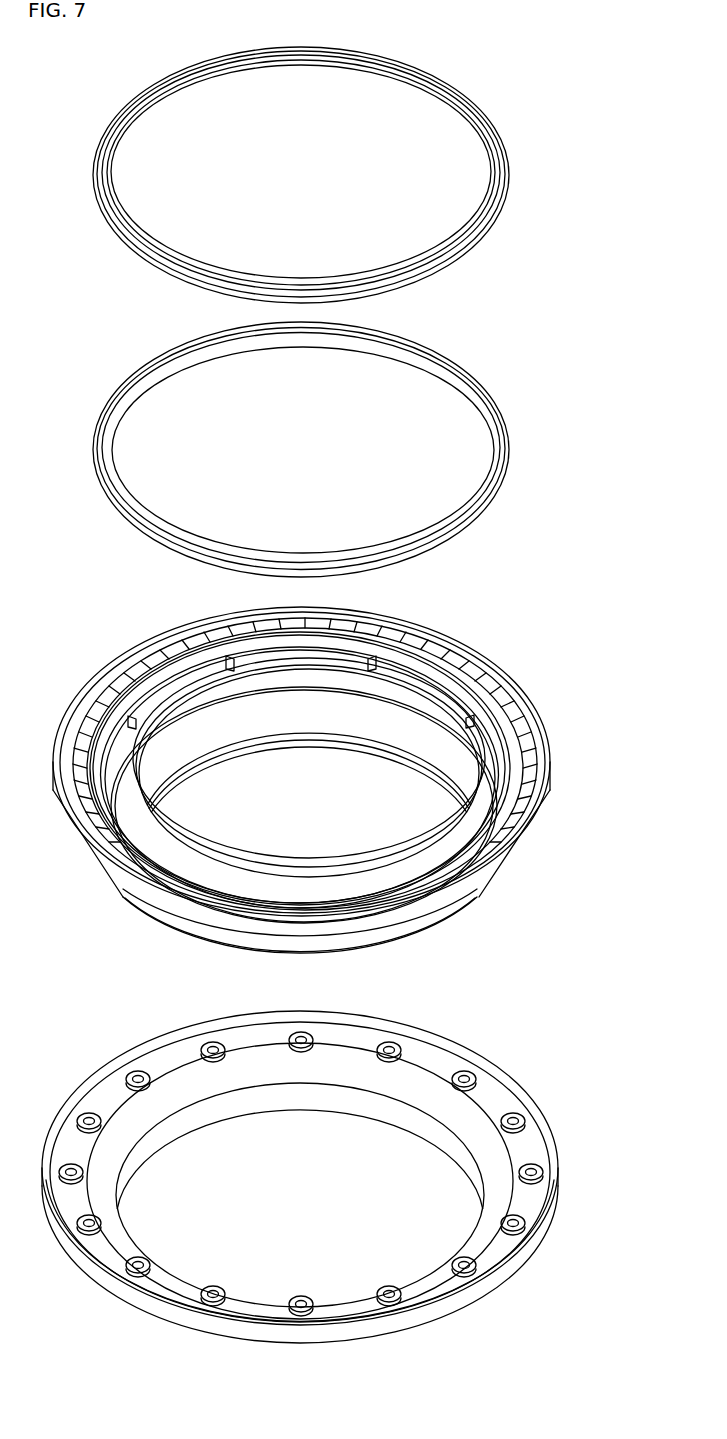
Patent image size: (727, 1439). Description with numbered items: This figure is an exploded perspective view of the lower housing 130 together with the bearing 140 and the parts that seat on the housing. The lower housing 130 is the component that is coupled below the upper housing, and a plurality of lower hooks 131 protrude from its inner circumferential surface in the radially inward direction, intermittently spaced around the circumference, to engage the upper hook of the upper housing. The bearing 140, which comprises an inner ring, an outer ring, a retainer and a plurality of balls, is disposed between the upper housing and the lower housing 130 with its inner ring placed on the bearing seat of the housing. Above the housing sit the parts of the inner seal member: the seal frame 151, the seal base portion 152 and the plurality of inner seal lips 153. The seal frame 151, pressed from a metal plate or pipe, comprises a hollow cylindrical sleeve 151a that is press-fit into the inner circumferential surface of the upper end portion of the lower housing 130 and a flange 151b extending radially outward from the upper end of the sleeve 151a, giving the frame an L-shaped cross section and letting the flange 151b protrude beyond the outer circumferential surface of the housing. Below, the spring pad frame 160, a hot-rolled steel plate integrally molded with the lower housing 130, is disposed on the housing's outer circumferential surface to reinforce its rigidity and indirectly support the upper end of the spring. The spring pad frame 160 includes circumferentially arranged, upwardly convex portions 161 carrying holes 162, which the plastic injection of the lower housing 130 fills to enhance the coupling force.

The lower housing 130 is at (359, 764).
The lower hook 131 is at (230, 667).
The bearing 140 is at (533, 690).
The seal frame 151 is at (358, 449).
The sleeve 151a is at (447, 382).
The flange 151b is at (505, 447).
The seal base portion 152 is at (351, 175).
The inner seal lips 153 is at (508, 212).
The spring pad frame 160 is at (351, 1177).
The convex portions 161 is at (545, 1178).
The holes 162 is at (532, 1163).